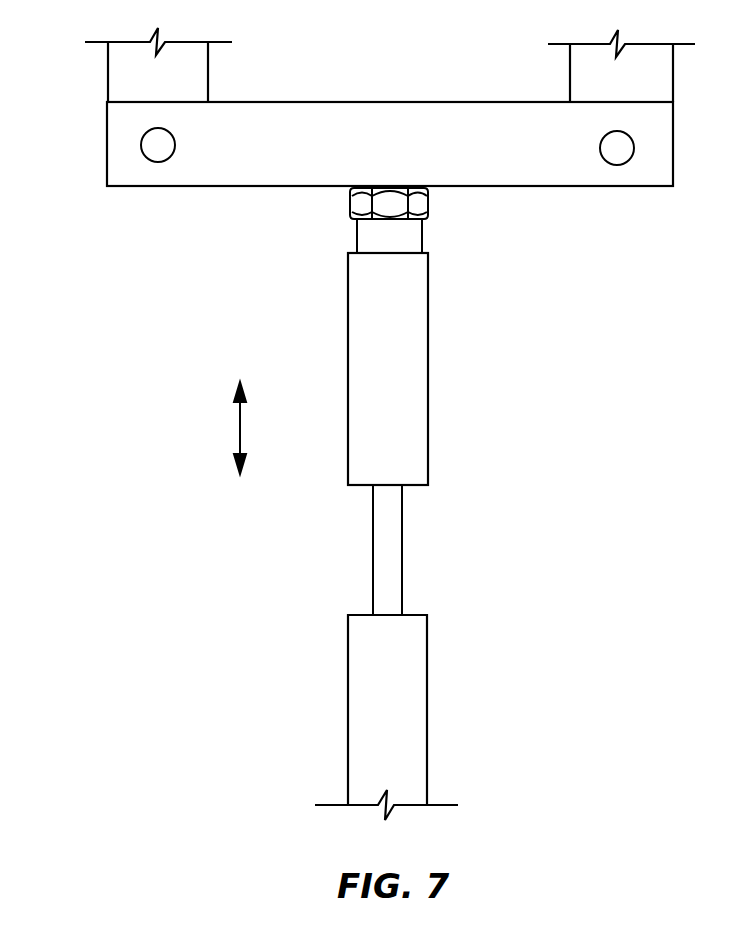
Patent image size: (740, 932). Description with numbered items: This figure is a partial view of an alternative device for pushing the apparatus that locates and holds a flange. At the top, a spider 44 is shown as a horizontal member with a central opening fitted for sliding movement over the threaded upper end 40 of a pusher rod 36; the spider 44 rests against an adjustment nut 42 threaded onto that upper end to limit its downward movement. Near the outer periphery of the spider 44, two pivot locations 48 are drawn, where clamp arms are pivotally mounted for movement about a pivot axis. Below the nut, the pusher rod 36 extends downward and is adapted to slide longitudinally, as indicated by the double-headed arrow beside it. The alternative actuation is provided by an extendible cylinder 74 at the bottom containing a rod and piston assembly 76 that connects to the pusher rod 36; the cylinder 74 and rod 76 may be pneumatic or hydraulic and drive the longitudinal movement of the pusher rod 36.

The pusher rod 36 is at (348, 307).
The threaded upper end 40 is at (423, 240).
The adjustment nut 42 is at (350, 198).
The spider 44 is at (107, 148).
The pivot mounting 48 is at (168, 147).
The extendible cylinder 74 is at (348, 690).
The rod and piston assembly 76 is at (373, 540).